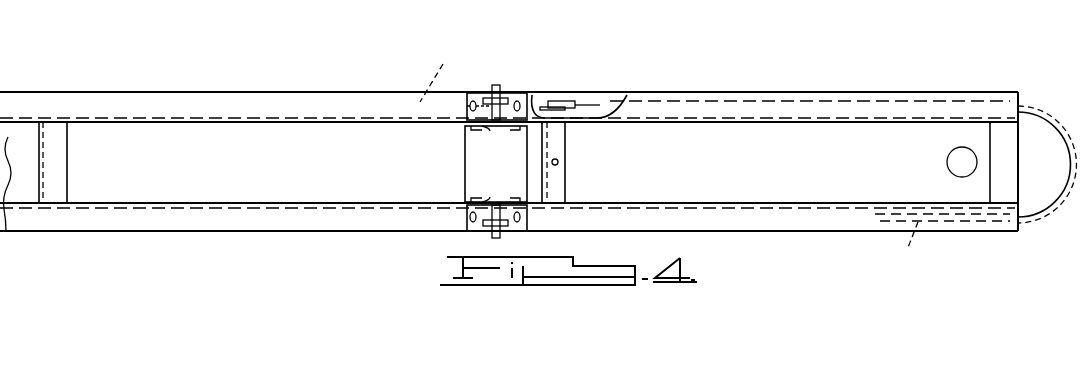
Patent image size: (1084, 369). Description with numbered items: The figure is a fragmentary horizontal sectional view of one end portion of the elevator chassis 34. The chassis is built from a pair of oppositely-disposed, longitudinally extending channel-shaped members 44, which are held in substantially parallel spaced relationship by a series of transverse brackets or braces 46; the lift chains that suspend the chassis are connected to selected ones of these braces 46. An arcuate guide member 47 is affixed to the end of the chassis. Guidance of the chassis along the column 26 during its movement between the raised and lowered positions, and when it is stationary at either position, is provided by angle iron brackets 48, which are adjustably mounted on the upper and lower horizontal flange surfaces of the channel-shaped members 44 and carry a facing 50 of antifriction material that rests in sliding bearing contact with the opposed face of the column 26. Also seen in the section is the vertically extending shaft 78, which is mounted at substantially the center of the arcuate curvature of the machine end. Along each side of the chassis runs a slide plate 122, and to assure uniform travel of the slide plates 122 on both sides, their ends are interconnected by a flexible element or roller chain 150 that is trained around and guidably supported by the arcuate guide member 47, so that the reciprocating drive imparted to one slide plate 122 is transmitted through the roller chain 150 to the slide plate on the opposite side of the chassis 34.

The column 26 is at (483, 158).
The elevator chassis 34 is at (630, 81).
The channel-shaped member 44 is at (320, 103).
The transverse bracket or brace 46 is at (57, 155).
The arcuate guide member 47 is at (1027, 110).
The angle iron bracket 48 is at (508, 108).
The facing 50 is at (490, 128).
The vertically extending shaft 78 is at (960, 157).
The slide plate 122 is at (670, 162).
The flexible element or roller chain 150 is at (1047, 212).